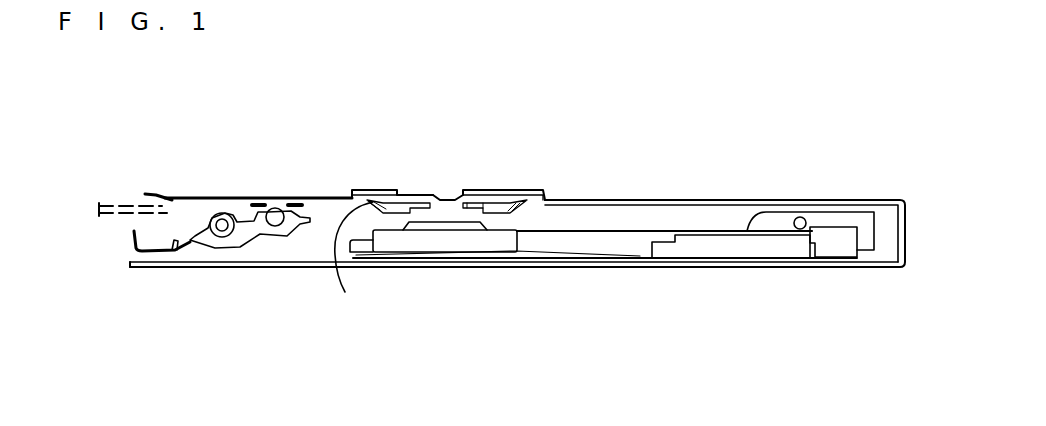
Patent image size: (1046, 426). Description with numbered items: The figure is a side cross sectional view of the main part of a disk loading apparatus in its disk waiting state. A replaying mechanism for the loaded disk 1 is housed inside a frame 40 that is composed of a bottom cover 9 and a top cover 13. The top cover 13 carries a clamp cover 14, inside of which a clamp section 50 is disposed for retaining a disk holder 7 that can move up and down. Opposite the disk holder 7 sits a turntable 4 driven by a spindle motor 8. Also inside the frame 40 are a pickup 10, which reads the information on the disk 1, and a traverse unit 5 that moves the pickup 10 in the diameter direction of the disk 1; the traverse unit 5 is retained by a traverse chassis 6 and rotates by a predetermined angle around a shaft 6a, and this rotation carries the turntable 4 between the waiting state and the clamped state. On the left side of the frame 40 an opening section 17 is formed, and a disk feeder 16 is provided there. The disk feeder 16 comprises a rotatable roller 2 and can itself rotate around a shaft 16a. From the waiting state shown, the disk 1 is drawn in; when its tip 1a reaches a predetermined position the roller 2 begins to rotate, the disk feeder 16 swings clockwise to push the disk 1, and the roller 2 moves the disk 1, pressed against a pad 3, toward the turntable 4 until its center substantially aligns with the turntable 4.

The disk 1 is at (122, 196).
The tip 1a is at (178, 196).
The roller 2 is at (283, 229).
The pad 3 is at (293, 196).
The turntable 4 is at (483, 192).
The traverse unit 5 is at (615, 247).
The traverse chassis 6 is at (862, 218).
The shaft 6a is at (801, 217).
The disk holder 7 is at (384, 196).
The spindle motor 8 is at (470, 241).
The bottom cover 9 is at (680, 260).
The pickup 10 is at (768, 249).
The top cover 13 is at (697, 197).
The clamp cover 14 is at (360, 191).
The disk feeder 16 is at (252, 229).
The shaft 16a is at (221, 232).
The opening section 17 is at (132, 225).
The frame 40 is at (573, 196).
The clamp section 50 is at (359, 261).